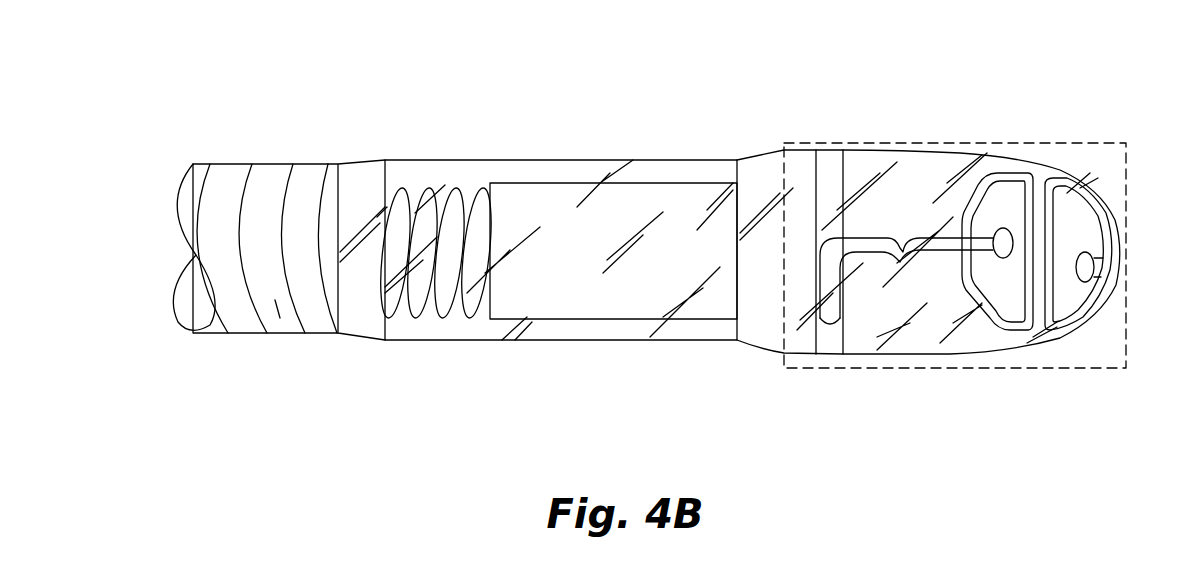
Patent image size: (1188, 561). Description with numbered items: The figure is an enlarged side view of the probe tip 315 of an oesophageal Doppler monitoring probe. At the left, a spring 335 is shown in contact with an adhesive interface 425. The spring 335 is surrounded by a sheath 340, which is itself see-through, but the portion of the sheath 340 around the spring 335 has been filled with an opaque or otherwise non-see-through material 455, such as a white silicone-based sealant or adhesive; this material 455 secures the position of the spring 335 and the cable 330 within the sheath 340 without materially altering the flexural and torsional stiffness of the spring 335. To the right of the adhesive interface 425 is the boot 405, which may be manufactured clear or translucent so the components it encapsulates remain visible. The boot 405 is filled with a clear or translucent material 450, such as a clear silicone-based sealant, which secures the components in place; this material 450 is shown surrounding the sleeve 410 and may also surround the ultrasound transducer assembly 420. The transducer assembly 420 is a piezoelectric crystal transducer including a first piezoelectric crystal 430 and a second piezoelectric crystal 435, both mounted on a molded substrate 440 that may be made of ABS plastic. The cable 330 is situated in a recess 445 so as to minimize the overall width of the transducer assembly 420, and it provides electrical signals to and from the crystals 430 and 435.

The probe tip 315 is at (287, 82).
The boot 405 is at (1126, 412).
The opaque material 455 is at (230, 175).
The sheath 340 is at (211, 333).
The spring 335 is at (278, 320).
The adhesive interface 425 is at (360, 158).
The sleeve 410 is at (524, 190).
The clear or translucent material 450 is at (584, 170).
The recess 445 is at (830, 167).
The molded substrate 440 is at (922, 180).
The cable 330 is at (845, 318).
The first piezoelectric crystal 430 is at (1013, 183).
The second piezoelectric crystal 435 is at (1075, 185).
The ultrasound transducer assembly 420 is at (1128, 165).